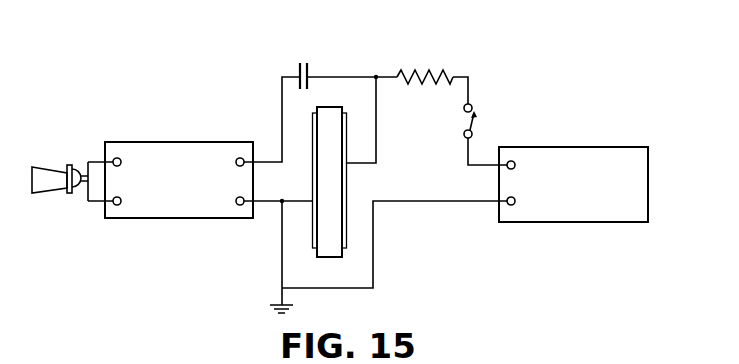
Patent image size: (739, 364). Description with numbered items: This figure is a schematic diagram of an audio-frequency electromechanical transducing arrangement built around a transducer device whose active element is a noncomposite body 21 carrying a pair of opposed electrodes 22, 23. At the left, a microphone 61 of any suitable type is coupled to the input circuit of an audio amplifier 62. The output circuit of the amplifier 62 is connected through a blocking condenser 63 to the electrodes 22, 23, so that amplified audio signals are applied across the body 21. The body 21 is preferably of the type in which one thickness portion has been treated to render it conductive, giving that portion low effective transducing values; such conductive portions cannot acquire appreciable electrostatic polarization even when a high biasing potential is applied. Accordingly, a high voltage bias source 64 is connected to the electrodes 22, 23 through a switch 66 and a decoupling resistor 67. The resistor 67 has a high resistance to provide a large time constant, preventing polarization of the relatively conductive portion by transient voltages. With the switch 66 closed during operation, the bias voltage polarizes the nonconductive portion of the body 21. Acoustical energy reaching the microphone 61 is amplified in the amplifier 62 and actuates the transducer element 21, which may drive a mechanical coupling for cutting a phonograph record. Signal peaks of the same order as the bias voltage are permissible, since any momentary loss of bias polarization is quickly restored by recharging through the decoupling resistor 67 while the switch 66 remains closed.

The noncomposite body 21 is at (336, 107).
The electrode 22 is at (312, 186).
The electrode 23 is at (347, 185).
The microphone 61 is at (40, 170).
The audio amplifier 62 is at (162, 142).
The blocking condenser 63 is at (299, 70).
The high voltage bias source 64 is at (586, 147).
The switch 66 is at (476, 122).
The decoupling resistor 67 is at (438, 72).